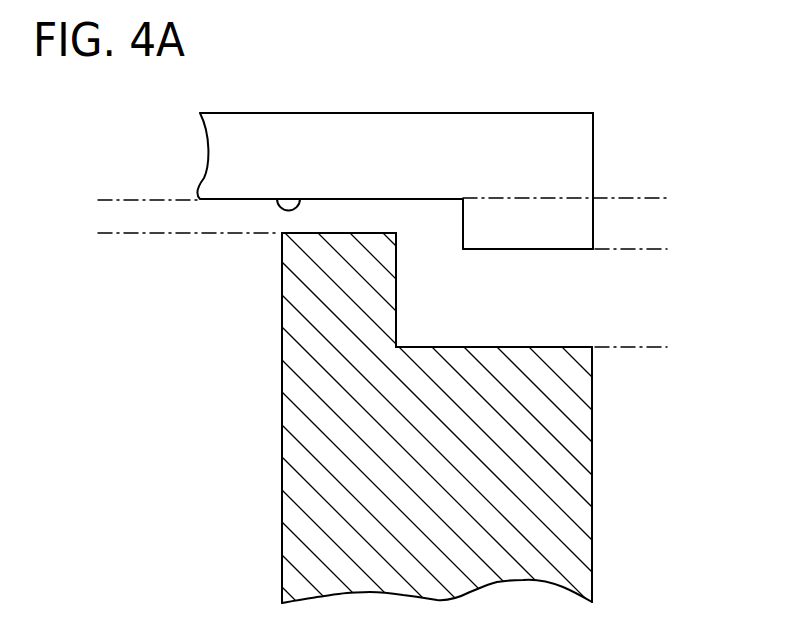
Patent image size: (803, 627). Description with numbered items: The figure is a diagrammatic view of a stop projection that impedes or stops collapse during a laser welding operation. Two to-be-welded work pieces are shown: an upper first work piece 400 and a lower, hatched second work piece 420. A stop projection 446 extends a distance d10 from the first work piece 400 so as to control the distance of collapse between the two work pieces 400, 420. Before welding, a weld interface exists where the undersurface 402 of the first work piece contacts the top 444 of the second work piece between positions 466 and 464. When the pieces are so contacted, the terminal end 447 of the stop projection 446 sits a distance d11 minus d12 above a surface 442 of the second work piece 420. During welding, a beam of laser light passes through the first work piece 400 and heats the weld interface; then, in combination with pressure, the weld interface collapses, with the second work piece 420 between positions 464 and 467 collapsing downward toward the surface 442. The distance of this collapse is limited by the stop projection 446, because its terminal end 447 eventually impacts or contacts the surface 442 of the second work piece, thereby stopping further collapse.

The first work piece 400 is at (310, 113).
The undersurface 402 is at (278, 198).
The second work piece 420 is at (282, 367).
The surface 442 is at (520, 347).
The top 444 is at (335, 232).
The stop projection 446 is at (580, 168).
The terminal end 447 is at (548, 250).
The position 464 is at (397, 233).
The position 466 is at (281, 233).
The position 467 is at (397, 346).
The distance d10 is at (629, 200).
The distance d11 is at (629, 250).
The distance d12 is at (126, 277).